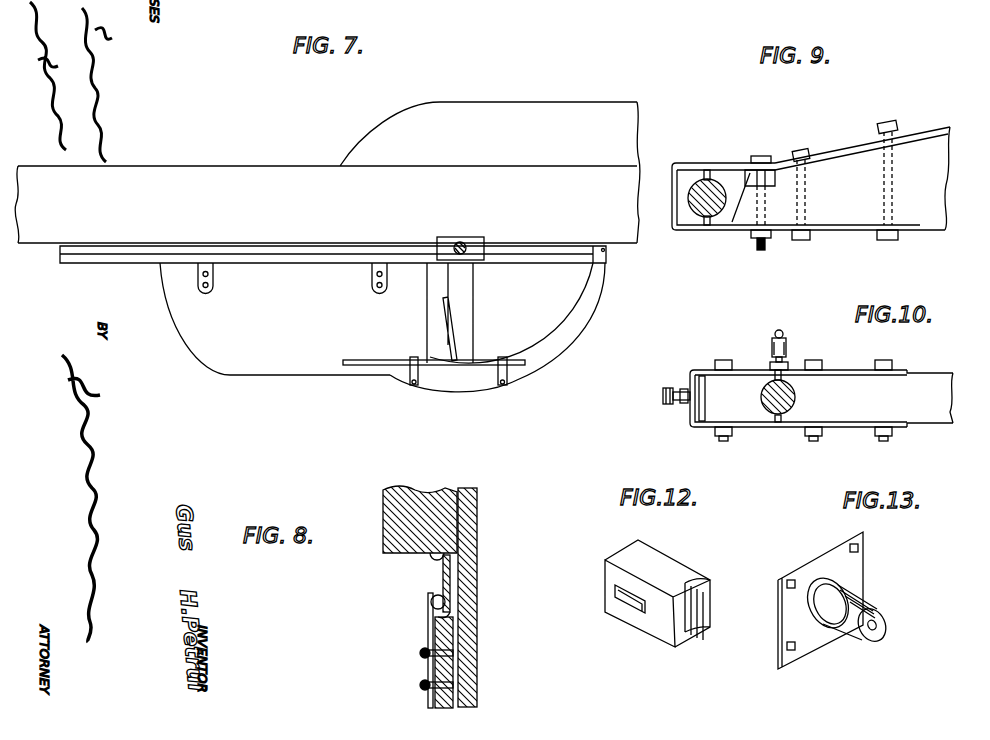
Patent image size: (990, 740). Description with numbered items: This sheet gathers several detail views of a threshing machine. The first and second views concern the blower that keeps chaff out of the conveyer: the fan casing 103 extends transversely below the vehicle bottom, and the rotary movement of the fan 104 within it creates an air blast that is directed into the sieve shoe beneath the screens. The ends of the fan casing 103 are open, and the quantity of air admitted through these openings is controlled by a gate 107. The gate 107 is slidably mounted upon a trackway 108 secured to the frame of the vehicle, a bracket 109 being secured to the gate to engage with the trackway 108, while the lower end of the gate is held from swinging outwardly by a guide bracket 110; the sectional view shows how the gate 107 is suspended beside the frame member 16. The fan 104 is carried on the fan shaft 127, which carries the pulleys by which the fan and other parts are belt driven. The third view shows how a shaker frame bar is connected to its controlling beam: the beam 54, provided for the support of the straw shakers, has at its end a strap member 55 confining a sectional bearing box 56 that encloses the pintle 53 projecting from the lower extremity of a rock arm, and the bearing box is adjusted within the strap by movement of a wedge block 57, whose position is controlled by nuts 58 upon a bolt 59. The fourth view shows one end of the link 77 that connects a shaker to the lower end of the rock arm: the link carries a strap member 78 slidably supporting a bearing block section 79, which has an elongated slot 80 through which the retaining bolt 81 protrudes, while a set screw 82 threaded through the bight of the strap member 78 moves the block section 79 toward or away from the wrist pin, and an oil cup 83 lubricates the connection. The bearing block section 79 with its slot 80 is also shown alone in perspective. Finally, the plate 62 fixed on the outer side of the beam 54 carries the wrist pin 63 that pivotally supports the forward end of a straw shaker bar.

In FIG. 7, the table top 16 is at (327, 172).
In FIG. 8, the table top 16 is at (393, 490).
In FIG. 7, the fan casing 103 is at (563, 345).
In FIG. 8, the fan casing 103 is at (478, 516).
In FIG. 7, the fan 104 is at (468, 317).
In FIG. 7, the gate 107 is at (275, 319).
In FIG. 8, the gate 107 is at (455, 631).
In FIG. 7, the trackway 108 is at (144, 250).
In FIG. 8, the trackway 108 is at (451, 580).
In FIG. 7, the bracket 109 is at (206, 264).
In FIG. 8, the bracket 109 is at (429, 628).
In FIG. 7, the guide bracket 110 is at (371, 366).
In FIG. 7, the fan shaft 127 is at (468, 238).
In FIG. 10, the pintle 53 is at (796, 400).
In FIG. 9, the beam 54 is at (862, 180).
In FIG. 9, the strap member 55 is at (721, 163).
In FIG. 9, the sectional bearing box 56 is at (718, 214).
In FIG. 9, the wedge block 57 is at (745, 222).
In FIG. 9, the nut 58 is at (770, 239).
In FIG. 9, the bolt 59 is at (777, 178).
In FIG. 10, the link 77 is at (934, 382).
In FIG. 10, the strap member 78 is at (764, 428).
In FIG. 10, the bearing block section 79 is at (721, 398).
In FIG. 12, the bearing block section 79 is at (612, 606).
In FIG. 12, the elongated slot 80 is at (638, 606).
In FIG. 10, the retaining bolt 81 is at (722, 361).
In FIG. 10, the set screw 82 is at (666, 402).
In FIG. 10, the oil cup 83 is at (786, 347).
In FIG. 13, the plate 62 is at (862, 578).
In FIG. 13, the wrist pin 63 is at (861, 611).